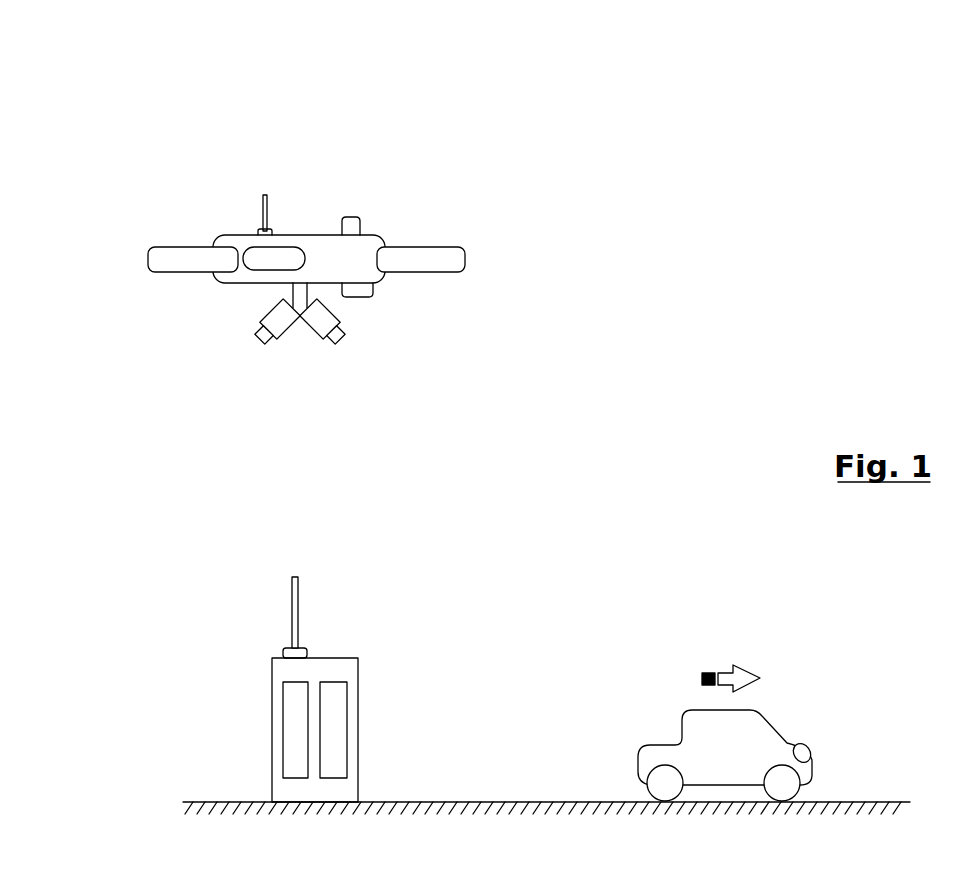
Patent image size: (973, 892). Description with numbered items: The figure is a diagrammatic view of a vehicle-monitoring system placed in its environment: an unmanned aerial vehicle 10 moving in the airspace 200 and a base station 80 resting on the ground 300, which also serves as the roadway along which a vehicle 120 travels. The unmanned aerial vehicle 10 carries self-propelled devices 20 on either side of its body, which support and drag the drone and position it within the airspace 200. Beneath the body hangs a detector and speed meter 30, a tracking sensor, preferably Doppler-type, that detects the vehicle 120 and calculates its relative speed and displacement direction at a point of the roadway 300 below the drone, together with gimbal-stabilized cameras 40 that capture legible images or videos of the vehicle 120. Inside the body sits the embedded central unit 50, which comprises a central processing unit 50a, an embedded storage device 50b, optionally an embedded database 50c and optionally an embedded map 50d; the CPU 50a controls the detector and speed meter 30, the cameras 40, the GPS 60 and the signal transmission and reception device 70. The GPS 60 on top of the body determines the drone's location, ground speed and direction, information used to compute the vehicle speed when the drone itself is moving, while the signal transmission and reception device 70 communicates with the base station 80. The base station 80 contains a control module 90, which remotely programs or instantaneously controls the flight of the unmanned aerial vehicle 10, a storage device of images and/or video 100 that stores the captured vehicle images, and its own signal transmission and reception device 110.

The unmanned aerial vehicle 10 is at (172, 115).
The self-propelled devices 20 is at (150, 250).
The detector and speed meter 30 is at (377, 298).
The cameras 40 is at (273, 337).
The embedded central unit 50 is at (258, 262).
The central processing unit 50a is at (198, 325).
The embedded storage device 50b is at (198, 325).
The embedded database 50c is at (198, 325).
The embedded map 50d is at (275, 258).
The GPS device 60 is at (360, 217).
The signal transmission and reception device 70 is at (265, 195).
The base station 80 is at (173, 548).
The control module 90 is at (297, 728).
The storage device of images and/or video 100 is at (327, 728).
The signal transmission and reception device 110 is at (297, 578).
The vehicle 120 is at (723, 748).
The airspace 200 is at (670, 388).
The ground 300 is at (512, 802).